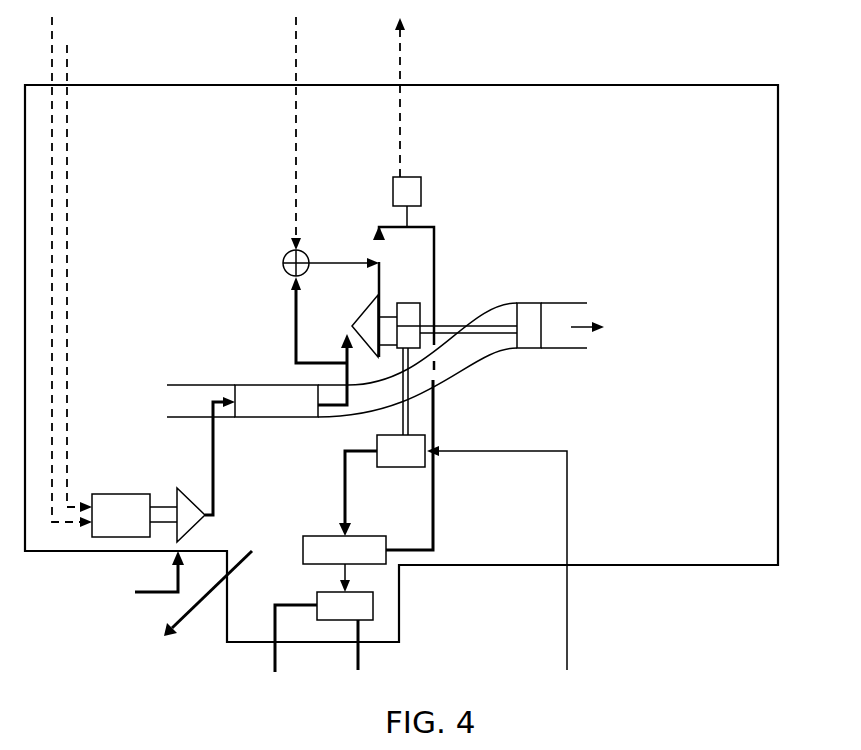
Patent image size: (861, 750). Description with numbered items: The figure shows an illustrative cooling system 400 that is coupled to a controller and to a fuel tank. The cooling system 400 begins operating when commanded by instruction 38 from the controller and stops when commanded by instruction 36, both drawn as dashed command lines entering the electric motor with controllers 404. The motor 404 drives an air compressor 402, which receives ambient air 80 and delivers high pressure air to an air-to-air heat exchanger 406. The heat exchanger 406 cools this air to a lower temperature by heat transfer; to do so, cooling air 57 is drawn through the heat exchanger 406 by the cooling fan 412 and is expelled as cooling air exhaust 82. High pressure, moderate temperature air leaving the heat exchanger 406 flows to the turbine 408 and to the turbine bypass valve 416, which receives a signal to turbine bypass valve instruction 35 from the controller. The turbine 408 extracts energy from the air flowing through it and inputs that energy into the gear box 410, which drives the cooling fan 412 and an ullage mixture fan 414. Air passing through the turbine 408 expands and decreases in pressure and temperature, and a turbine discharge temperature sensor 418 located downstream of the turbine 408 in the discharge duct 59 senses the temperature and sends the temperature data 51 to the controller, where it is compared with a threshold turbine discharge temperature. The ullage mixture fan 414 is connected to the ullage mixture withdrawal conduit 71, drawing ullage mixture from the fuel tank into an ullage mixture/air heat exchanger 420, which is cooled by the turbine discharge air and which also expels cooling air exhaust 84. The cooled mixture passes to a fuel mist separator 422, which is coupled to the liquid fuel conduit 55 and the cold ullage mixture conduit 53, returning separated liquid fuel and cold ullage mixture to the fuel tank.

The cooling system 400 is at (779, 365).
The air compressor 402 is at (179, 489).
The electric motor with controllers 404 is at (119, 494).
The air-to-air heat exchanger 406 is at (264, 384).
The turbine 408 is at (373, 300).
The gear box 410 is at (405, 303).
The cooling fan 412 is at (527, 302).
The ullage mixture fan 414 is at (401, 469).
The turbine bypass valve 416 is at (282, 263).
The turbine discharge temperature sensor 418 is at (412, 176).
The ullage mixture/air heat exchanger 420 is at (302, 540).
The fuel mist separator 422 is at (317, 596).
The signal to turbine bypass valve instruction 35 is at (297, 25).
The instruction 36 is at (53, 25).
The instruction 38 is at (68, 60).
The turbine discharge temperature data 51 is at (401, 42).
The cold ullage mixture conduit 53 is at (277, 662).
The liquid fuel conduit 55 is at (360, 662).
The cooling air 57 is at (172, 402).
The discharge duct 59 is at (425, 226).
The ullage mixture withdrawal conduit 71 is at (568, 664).
The ambient air 80 is at (138, 600).
The cooling air exhaust 82 is at (593, 343).
The cooling air exhaust 84 is at (203, 622).